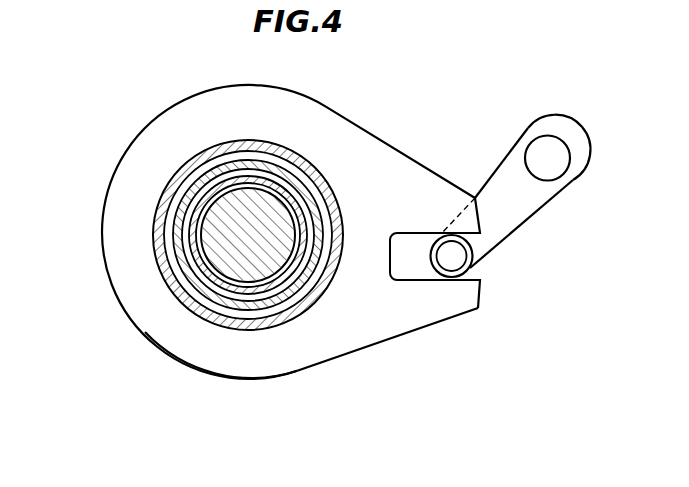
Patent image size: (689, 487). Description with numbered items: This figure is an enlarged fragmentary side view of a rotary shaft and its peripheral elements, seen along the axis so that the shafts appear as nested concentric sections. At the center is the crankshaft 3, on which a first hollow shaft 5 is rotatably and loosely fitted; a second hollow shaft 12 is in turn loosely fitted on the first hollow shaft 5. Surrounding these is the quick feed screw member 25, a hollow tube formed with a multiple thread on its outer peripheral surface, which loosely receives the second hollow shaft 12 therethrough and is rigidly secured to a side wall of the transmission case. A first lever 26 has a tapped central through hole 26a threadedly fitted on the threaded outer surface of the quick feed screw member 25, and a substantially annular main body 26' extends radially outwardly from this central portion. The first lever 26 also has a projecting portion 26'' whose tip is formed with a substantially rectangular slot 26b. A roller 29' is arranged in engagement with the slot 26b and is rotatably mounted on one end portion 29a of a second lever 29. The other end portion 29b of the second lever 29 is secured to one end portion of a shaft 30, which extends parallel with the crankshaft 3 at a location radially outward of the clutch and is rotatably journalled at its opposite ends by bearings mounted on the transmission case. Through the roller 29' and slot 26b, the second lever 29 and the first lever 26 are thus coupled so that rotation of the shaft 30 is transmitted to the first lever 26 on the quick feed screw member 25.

The crankshaft 3 is at (185, 296).
The first hollow shaft 5 is at (168, 279).
The second hollow shaft 12 is at (176, 256).
The quick feed screw member 25 is at (205, 160).
The first lever 26 is at (291, 213).
The tapped central through hole 26a is at (167, 220).
The slot 26b is at (414, 233).
The main body 26' is at (221, 401).
The projecting portion 26'' is at (387, 355).
The second lever 29 is at (485, 180).
The roller 29' is at (496, 273).
The one end portion of second lever 29a is at (485, 245).
The other end portion of second lever 29b is at (562, 183).
The shaft 30 is at (542, 145).